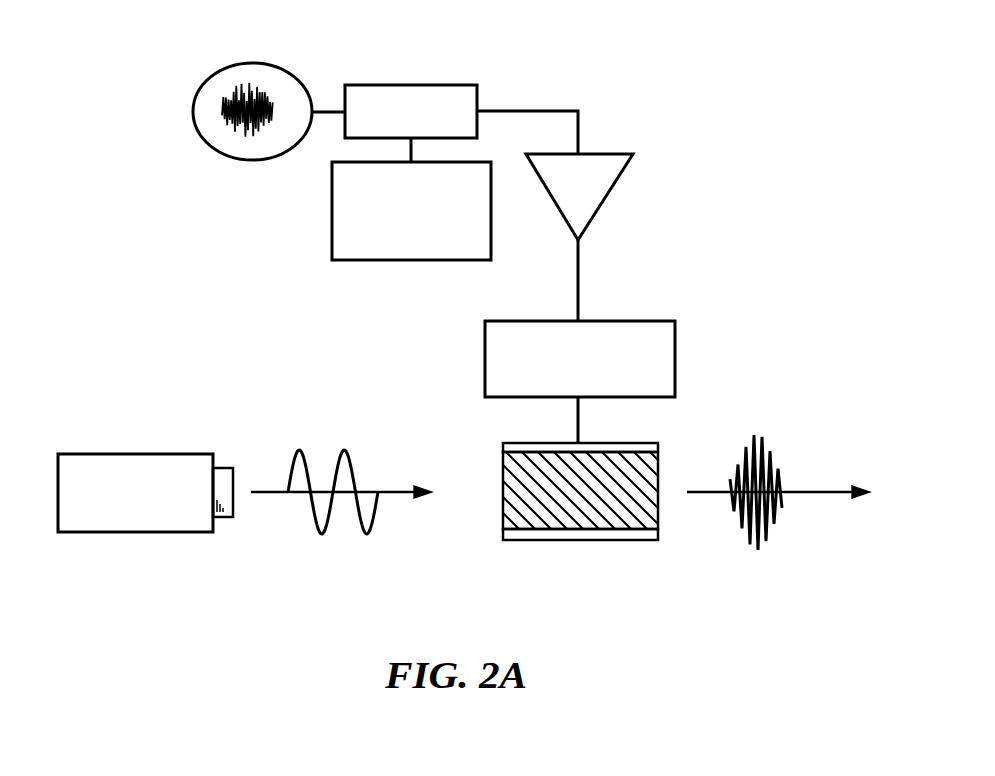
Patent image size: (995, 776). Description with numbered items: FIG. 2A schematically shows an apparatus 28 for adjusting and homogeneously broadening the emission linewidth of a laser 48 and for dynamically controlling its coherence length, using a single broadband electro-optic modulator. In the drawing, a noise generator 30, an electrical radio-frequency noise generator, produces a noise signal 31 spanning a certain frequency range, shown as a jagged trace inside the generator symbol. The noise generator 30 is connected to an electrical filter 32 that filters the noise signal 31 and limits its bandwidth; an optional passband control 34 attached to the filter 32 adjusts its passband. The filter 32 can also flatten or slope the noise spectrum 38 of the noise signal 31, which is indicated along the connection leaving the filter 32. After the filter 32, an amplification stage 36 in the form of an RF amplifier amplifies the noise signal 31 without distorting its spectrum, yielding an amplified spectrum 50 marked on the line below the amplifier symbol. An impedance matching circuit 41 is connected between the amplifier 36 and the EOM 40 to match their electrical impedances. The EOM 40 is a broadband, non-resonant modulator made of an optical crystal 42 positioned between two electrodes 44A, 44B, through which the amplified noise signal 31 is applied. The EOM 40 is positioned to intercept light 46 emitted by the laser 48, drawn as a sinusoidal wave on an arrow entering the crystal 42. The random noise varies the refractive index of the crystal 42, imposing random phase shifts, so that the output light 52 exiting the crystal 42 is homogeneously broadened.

The apparatus 28 is at (770, 83).
The noise generator 30 is at (252, 160).
The noise signal 31 is at (262, 90).
The filter 32 is at (410, 85).
The passband control 34 is at (450, 260).
The amplification stage 36 is at (608, 193).
The noise spectrum 38 is at (492, 105).
The EOM 40 is at (560, 518).
The impedance matching circuit 41 is at (675, 349).
The optical crystal 42 is at (660, 483).
The electrode 44A is at (587, 540).
The electrode 44B is at (503, 449).
The light 46 is at (312, 528).
The laser 48 is at (118, 453).
The amplified spectrum 50 is at (578, 280).
The output light 52 is at (770, 453).